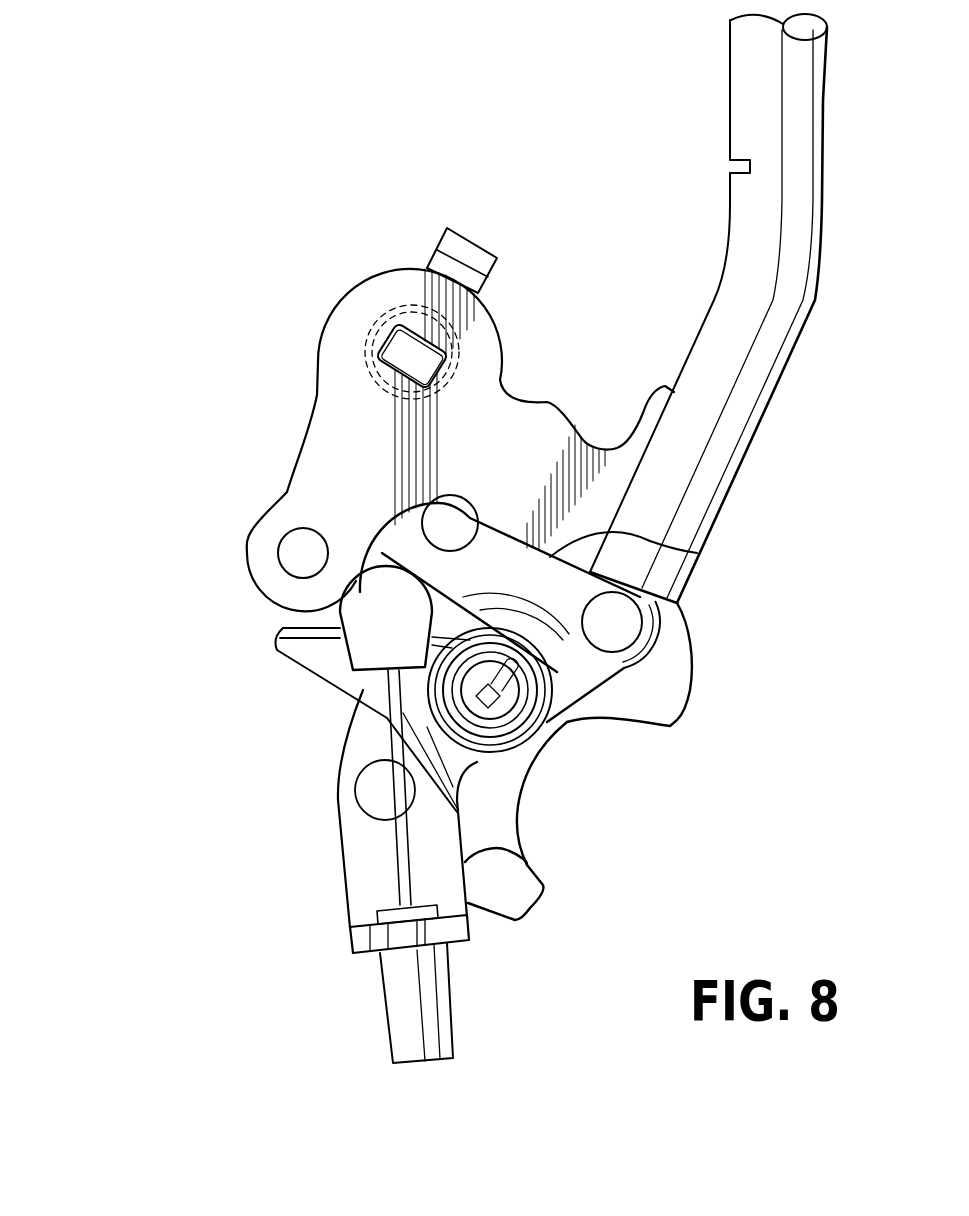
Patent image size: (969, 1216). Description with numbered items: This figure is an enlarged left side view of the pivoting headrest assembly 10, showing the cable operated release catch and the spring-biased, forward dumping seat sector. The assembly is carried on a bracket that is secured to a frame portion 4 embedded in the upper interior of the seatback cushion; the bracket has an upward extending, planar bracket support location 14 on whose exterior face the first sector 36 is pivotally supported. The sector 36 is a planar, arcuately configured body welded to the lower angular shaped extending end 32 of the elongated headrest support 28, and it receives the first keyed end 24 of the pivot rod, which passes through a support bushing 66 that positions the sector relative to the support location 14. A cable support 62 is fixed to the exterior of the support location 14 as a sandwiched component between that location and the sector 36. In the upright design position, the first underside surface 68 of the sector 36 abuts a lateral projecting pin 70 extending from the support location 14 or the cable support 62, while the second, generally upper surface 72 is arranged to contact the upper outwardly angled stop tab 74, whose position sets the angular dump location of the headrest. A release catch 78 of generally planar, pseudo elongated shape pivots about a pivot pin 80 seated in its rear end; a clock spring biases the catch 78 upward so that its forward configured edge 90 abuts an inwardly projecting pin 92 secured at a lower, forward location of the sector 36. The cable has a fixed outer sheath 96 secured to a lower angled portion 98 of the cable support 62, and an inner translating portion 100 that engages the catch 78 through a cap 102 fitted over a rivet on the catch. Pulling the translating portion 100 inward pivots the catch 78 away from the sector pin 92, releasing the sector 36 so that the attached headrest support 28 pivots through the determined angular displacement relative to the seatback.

The headrest assembly 10 is at (138, 355).
The bracket support location 14 is at (546, 711).
The first keyed end 24 is at (373, 336).
The headrest support 28 is at (752, 217).
The lower angular shaped extending end 32 is at (718, 467).
The first sector 36 is at (330, 468).
The cable support 62 is at (537, 864).
The support bushing 66 is at (380, 312).
The first surface 68 is at (697, 553).
The lateral projecting pin 70 is at (625, 633).
The second surface 72 is at (545, 400).
The stop tab 74 is at (442, 243).
The release catch 78 is at (307, 669).
The pivot pin 80 is at (567, 722).
The forward configured edge 90 is at (283, 628).
The inwardly projecting pin 92 is at (295, 552).
The fixed outer sheath 96 is at (430, 1013).
The lower angled portion 98 is at (347, 957).
The inner translating portion 100 is at (390, 845).
The cap 102 is at (360, 653).
The frame portion 4 is at (533, 752).